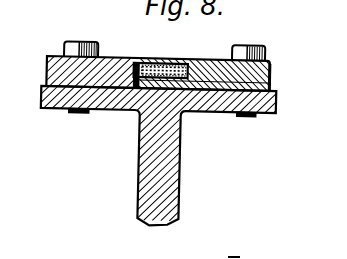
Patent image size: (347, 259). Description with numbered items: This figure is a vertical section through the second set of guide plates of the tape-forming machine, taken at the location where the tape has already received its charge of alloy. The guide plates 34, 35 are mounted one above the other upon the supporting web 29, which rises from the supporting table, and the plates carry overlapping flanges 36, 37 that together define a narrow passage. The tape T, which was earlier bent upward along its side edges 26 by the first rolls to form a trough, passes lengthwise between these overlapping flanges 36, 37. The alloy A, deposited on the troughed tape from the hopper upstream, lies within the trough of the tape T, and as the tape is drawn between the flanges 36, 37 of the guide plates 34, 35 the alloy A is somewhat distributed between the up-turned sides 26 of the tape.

The upturned side edges of the tape 26 is at (134, 68).
The supporting web 29 is at (163, 180).
The guide plate 34 is at (119, 40).
The guide plate 35 is at (272, 70).
The overlapping flange 36 is at (166, 50).
The overlapping flange 37 is at (132, 108).
The alloy A is at (172, 66).
The tape T is at (197, 70).